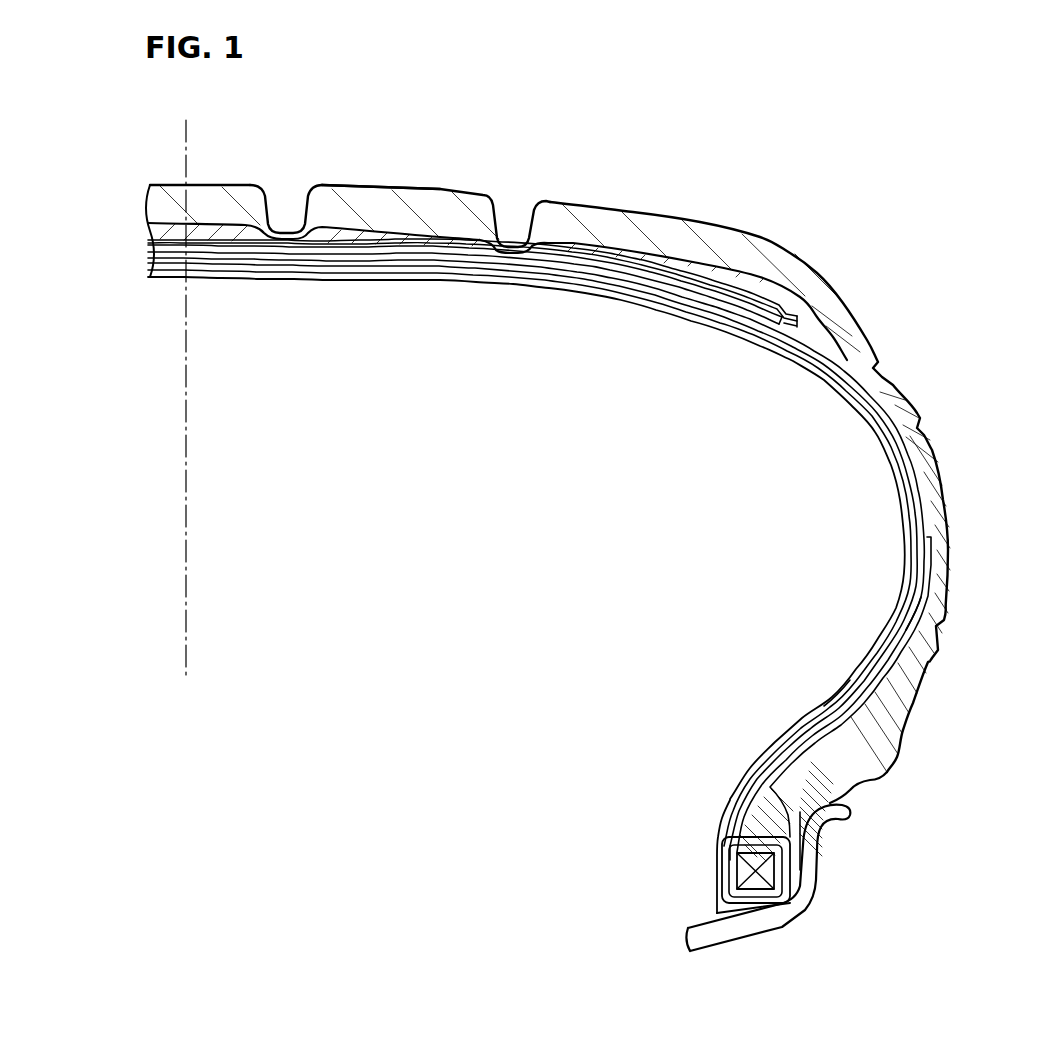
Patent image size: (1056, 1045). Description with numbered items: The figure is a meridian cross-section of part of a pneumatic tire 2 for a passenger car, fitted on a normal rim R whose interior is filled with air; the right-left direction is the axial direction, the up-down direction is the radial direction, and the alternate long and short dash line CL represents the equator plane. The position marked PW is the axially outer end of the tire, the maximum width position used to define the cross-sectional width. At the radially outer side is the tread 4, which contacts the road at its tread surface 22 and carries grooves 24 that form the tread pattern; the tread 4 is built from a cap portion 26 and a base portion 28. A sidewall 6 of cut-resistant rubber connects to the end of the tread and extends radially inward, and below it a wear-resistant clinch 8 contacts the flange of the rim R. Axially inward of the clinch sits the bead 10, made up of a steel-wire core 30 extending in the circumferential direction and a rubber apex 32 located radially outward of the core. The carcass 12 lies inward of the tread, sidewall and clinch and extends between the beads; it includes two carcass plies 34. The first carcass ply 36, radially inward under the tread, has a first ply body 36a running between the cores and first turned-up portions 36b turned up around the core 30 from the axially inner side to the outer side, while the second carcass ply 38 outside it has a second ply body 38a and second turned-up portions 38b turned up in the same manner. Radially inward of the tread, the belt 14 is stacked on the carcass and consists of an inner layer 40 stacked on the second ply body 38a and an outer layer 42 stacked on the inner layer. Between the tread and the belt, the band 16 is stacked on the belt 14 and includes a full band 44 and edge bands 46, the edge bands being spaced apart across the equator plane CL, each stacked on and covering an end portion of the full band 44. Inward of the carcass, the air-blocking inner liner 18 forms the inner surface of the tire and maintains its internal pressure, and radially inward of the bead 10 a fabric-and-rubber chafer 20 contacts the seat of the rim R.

The tire 2 is at (932, 297).
The tread 4 is at (615, 137).
The sidewall 6 is at (920, 446).
The clinch 8 is at (832, 790).
The bead 10 is at (648, 812).
The carcass 12 is at (405, 362).
The belt 14 is at (525, 362).
The band 16 is at (745, 137).
The inner liner 18 is at (236, 280).
The chafer 20 is at (717, 898).
The tread surface 22 is at (392, 185).
The groove 24 is at (310, 215).
The cap portion 26 is at (556, 210).
The base portion 28 is at (596, 248).
The core 30 is at (748, 870).
The apex 32 is at (757, 833).
The carcass ply 34 is at (514, 599).
The first carcass ply 36 is at (330, 280).
The second carcass ply 38 is at (378, 278).
The inner layer 40 is at (456, 270).
The outer layer 42 is at (503, 265).
The full band 44 is at (672, 268).
The edge band 46 is at (714, 274).
The first ply body 36a is at (842, 700).
The first turned-up portion 36b is at (945, 612).
The second ply body 38a is at (905, 556).
The second turned-up portion 38b is at (790, 832).
The equator plane CL is at (192, 515).
The axially outer end PW is at (953, 557).
The rim R is at (808, 899).